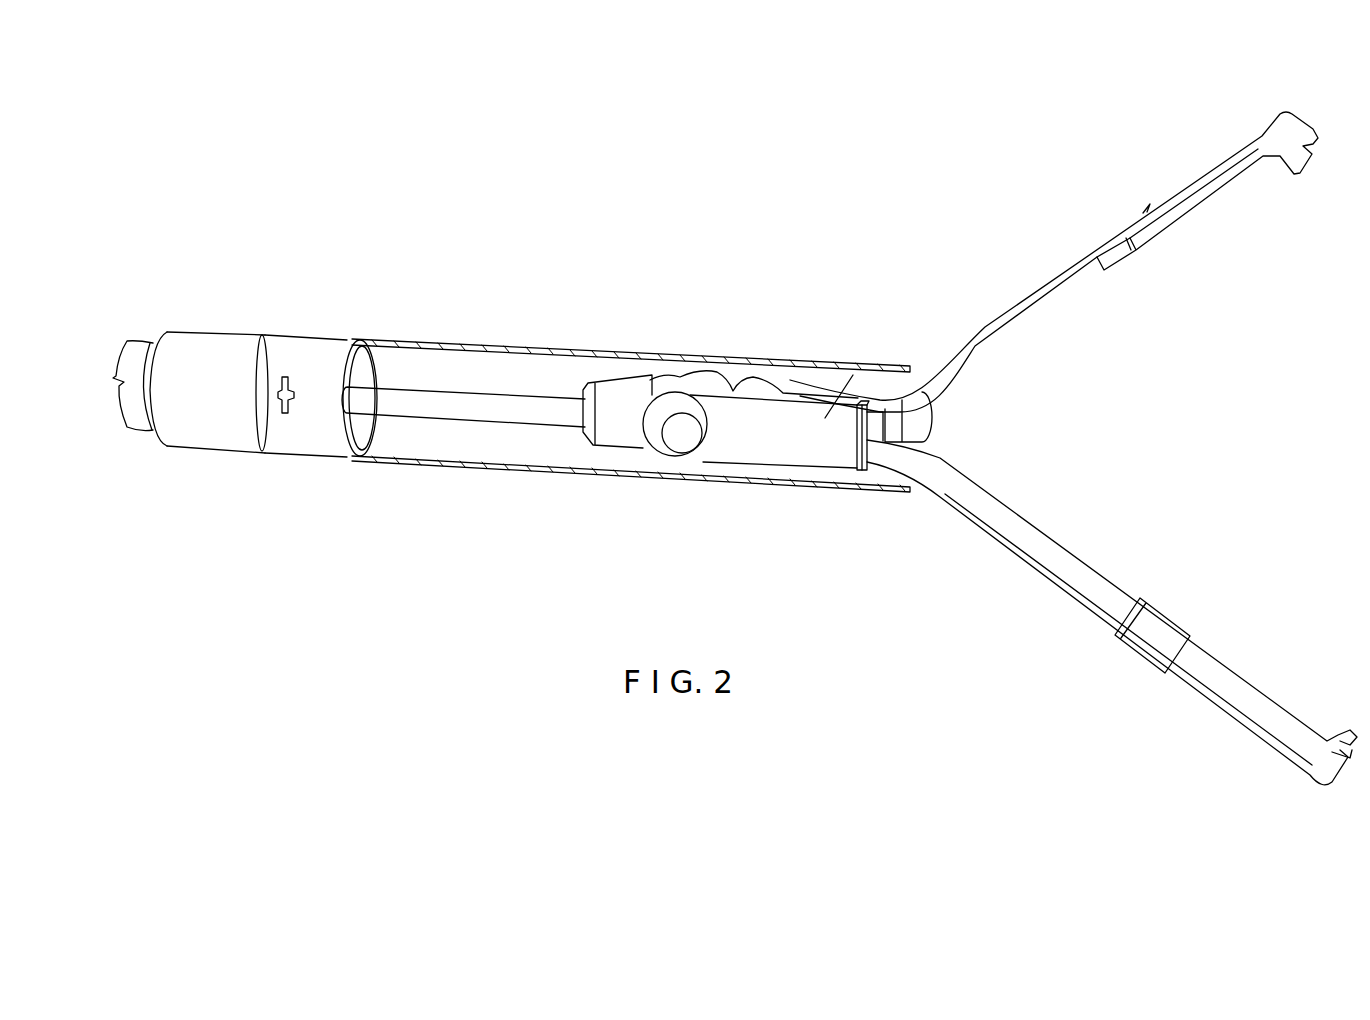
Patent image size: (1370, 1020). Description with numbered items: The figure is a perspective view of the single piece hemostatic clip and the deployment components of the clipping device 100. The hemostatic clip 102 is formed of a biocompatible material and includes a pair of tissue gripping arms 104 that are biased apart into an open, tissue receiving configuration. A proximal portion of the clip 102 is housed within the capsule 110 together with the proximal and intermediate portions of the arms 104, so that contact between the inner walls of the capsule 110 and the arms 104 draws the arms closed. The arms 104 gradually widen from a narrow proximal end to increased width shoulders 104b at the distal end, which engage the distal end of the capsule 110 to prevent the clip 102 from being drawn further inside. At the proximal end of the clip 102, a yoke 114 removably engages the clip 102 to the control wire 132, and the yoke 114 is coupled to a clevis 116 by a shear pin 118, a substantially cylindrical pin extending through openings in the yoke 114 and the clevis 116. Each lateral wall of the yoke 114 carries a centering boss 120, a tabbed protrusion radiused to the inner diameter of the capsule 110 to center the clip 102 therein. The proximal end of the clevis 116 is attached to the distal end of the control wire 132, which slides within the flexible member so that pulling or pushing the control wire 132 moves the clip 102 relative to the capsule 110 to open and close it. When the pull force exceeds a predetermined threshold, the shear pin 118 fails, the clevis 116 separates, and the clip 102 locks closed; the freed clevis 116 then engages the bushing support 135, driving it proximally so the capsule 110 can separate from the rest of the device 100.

The clipping device 100 is at (772, 208).
The hemostatic clip 102 is at (1173, 151).
The tissue gripping arms 104 is at (1062, 552).
The shoulders 104b is at (1143, 667).
The capsule 110 is at (447, 347).
The yoke 114 is at (828, 388).
The clevis 116 is at (620, 388).
The shear pin 118 is at (670, 438).
The centering boss 120 is at (853, 440).
The control wire 132 is at (417, 383).
The bushing support 135 is at (300, 352).